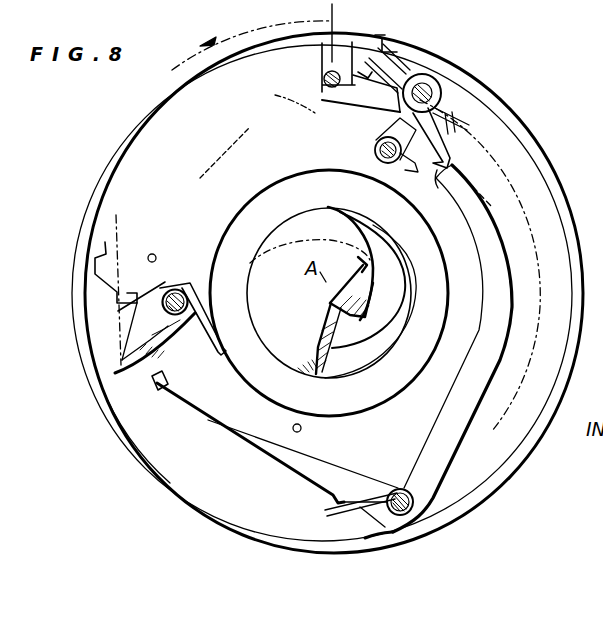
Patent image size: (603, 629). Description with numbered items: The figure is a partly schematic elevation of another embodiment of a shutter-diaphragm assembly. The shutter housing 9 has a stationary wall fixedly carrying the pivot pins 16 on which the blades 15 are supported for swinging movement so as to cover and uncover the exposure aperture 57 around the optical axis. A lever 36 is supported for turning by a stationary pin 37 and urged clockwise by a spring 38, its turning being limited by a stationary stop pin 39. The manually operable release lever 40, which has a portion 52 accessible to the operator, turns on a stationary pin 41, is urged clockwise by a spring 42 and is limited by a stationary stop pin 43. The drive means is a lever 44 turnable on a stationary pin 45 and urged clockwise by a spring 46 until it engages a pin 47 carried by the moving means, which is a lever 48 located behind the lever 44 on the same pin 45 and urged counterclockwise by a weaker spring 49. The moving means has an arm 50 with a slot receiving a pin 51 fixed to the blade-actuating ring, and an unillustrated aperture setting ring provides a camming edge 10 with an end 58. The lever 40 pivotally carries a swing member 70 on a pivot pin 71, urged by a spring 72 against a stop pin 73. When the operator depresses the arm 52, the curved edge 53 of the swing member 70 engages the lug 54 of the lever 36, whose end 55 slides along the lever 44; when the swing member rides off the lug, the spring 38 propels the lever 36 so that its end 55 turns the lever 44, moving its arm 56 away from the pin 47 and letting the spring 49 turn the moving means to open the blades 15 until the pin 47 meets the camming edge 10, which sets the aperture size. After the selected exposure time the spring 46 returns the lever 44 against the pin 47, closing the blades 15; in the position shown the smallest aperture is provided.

The shutter housing 9 is at (559, 170).
The camming edge 10 is at (258, 128).
The blades 15 is at (268, 342).
The pivot pins 16 is at (282, 106).
The lever 36 is at (514, 309).
The stationary pin 37 is at (398, 488).
The spring 38 is at (394, 535).
The stationary stop pin 39 is at (312, 430).
The release lever 40 is at (178, 287).
The stationary pin 41 is at (329, 293).
The spring 42 is at (118, 312).
The stationary stop pin 43 is at (152, 254).
The lever (drive means) 44 is at (438, 164).
The stationary pin 45 is at (436, 78).
The spring 46 is at (478, 128).
The pin 47 is at (325, 74).
The lever (moving means) 48 is at (324, 48).
The spring 49 is at (391, 48).
The arm 50 is at (394, 136).
The pin 51 is at (374, 153).
The portion (arm) 52 is at (105, 247).
The curved edge 53 is at (145, 338).
The lug 54 is at (164, 400).
The end 55 is at (444, 174).
The arm 56 is at (344, 107).
The exposure aperture 57 is at (415, 278).
The end 58 is at (322, 293).
The swing member 70 is at (100, 383).
The pivot pin 71 is at (182, 374).
The spring 72 is at (202, 319).
The stop pin 73 is at (180, 337).